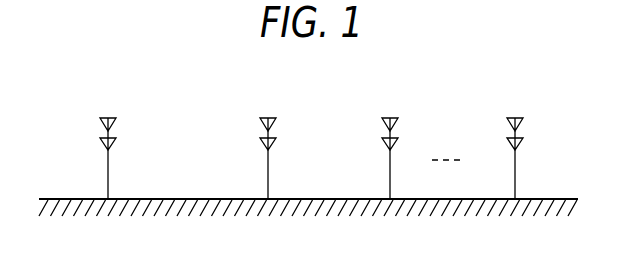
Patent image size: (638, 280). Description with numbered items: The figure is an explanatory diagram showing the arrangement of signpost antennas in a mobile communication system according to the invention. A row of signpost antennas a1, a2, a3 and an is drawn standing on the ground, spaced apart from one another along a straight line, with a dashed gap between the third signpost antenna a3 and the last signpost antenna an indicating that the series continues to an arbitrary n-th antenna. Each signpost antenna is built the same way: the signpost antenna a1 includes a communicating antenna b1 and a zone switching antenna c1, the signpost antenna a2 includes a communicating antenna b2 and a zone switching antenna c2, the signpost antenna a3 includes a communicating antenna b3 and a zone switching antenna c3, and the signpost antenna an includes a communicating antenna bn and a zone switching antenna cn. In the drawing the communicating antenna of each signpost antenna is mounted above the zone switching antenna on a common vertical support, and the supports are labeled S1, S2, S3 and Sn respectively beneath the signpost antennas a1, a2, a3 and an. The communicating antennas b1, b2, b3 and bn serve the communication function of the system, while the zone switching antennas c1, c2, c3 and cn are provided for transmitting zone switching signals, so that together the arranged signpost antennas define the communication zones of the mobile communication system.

The communicating antenna b1 is at (100, 117).
The signpost antenna a1 is at (113, 127).
The zone switching antenna c1 is at (89, 153).
The transmitter station 1 S1 is at (108, 164).
The communicating antenna b2 is at (260, 117).
The signpost antenna a2 is at (273, 127).
The zone switching antenna c2 is at (249, 153).
The transmitter station 2 S2 is at (268, 164).
The communicating antenna b3 is at (382, 117).
The signpost antenna a3 is at (395, 127).
The zone switching antenna c3 is at (371, 153).
The transmitter station 3 S3 is at (390, 164).
The communicating antenna bn is at (507, 117).
The signpost antenna an is at (520, 127).
The zone switching antenna cn is at (496, 153).
The transmitter station n Sn is at (515, 164).